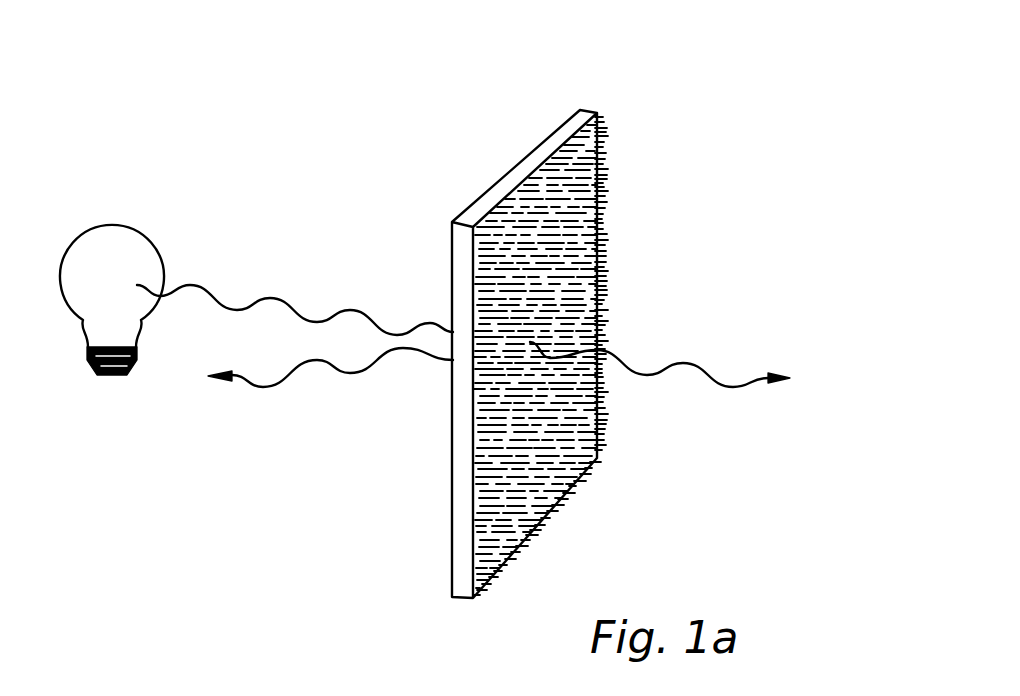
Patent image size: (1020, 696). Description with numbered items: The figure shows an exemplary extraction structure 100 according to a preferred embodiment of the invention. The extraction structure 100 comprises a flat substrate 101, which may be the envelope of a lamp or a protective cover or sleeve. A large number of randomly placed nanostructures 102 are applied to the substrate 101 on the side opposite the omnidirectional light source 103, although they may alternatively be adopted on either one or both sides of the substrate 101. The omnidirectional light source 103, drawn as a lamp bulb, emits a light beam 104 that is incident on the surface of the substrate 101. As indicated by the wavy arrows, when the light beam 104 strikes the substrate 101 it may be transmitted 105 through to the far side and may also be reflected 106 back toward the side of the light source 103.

The extraction structure 100 is at (703, 56).
The flat substrate 101 is at (591, 110).
The nanostructures 102 is at (588, 218).
The omnidirectional light source 103 is at (132, 243).
The light beam 104 is at (283, 300).
The transmitted light 105 is at (702, 367).
The reflected light 106 is at (350, 373).